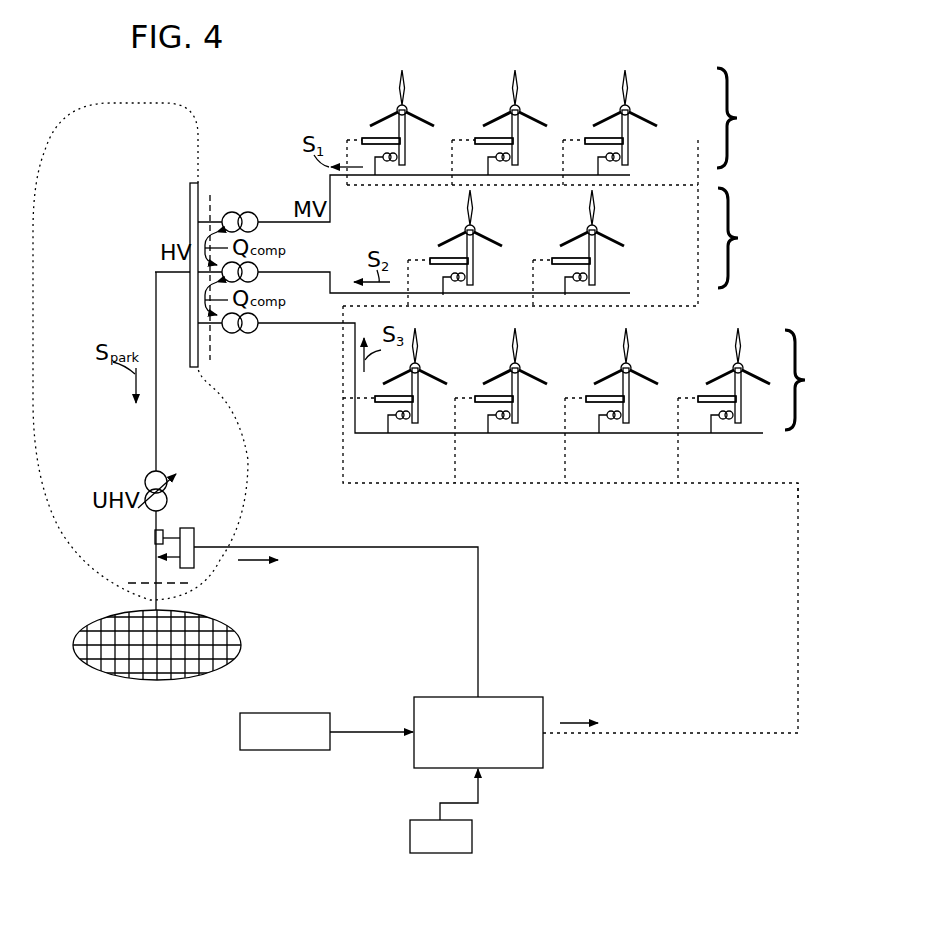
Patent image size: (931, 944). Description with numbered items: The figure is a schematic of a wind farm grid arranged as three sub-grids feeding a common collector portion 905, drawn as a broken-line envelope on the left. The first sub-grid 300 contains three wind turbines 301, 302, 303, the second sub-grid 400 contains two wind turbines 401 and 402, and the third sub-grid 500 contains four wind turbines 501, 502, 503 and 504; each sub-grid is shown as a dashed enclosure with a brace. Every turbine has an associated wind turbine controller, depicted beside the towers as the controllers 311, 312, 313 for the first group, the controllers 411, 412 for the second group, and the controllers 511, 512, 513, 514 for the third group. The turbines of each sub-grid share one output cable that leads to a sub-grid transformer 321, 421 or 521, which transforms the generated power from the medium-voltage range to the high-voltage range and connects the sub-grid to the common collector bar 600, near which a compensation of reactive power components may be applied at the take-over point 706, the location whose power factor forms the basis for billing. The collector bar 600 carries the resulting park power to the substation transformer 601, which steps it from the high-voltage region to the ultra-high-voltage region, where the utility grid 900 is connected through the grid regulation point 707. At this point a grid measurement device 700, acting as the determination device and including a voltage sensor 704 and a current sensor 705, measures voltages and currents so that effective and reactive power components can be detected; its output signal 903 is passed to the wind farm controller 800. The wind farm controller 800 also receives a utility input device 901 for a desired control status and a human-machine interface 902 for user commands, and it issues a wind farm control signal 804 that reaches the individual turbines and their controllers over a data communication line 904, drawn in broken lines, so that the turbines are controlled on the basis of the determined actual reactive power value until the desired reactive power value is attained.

The first sub-grid 300 is at (737, 118).
The wind turbine 301 is at (415, 112).
The wind turbine 302 is at (530, 112).
The wind turbine 303 is at (640, 110).
The wind turbine controller 311 is at (363, 138).
The wind turbine controller 312 is at (477, 138).
The wind turbine controller 313 is at (586, 138).
The sub-grid transformer 321 is at (241, 212).
The second sub-grid 400 is at (738, 238).
The wind turbine 401 is at (483, 233).
The wind turbine 402 is at (608, 236).
The wind turbine controller 411 is at (431, 258).
The wind turbine controller 412 is at (553, 258).
The sub-grid transformer 421 is at (262, 272).
The third sub-grid 500 is at (805, 380).
The wind turbine 501 is at (428, 368).
The wind turbine 502 is at (533, 368).
The wind turbine 503 is at (645, 371).
The wind turbine 504 is at (750, 358).
The wind turbine controller 511 is at (380, 402).
The wind turbine controller 512 is at (487, 402).
The wind turbine controller 513 is at (597, 402).
The wind turbine controller 514 is at (710, 402).
The sub-grid transformer 521 is at (257, 331).
The collector bar 600 is at (190, 213).
The substation transformer 601 is at (168, 502).
The grid measurement device 700 is at (195, 547).
The voltage sensor 704 is at (157, 557).
The current sensor 705 is at (155, 533).
The take-over point 706 is at (212, 212).
The grid regulation point 707 is at (128, 585).
The wind farm controller 800 is at (430, 715).
The wind farm control signal 804 is at (577, 722).
The utility grid 900 is at (146, 661).
The utility input device 901 is at (285, 730).
The human-machine interface 902 is at (422, 830).
The park controller output signal 903 is at (257, 565).
The data communication device 904 is at (798, 627).
The collector portion 905 is at (80, 115).